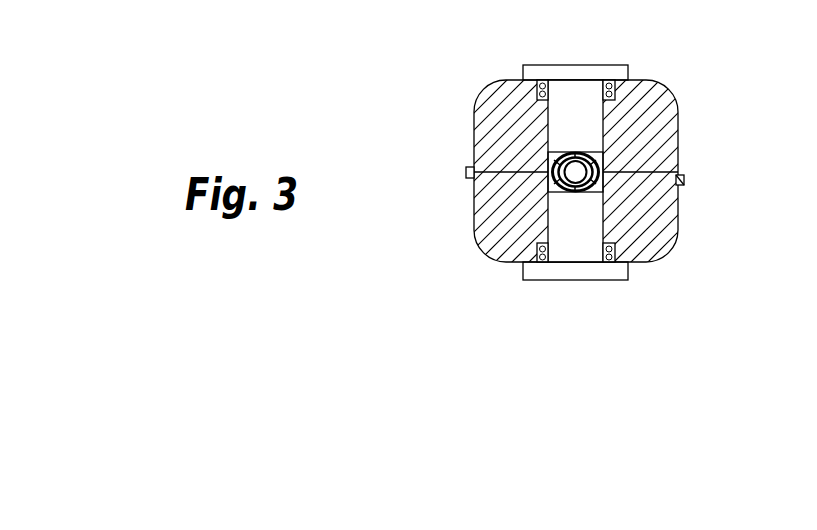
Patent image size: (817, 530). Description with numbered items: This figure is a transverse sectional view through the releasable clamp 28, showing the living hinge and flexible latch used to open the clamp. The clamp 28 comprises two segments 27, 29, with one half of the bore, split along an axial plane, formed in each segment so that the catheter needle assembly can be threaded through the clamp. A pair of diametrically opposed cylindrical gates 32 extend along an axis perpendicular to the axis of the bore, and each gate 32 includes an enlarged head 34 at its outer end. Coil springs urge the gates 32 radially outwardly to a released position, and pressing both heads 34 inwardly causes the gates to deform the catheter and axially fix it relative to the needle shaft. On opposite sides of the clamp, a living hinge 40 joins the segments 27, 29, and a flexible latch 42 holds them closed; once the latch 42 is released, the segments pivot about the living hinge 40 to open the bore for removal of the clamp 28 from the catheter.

The segment 27 is at (475, 119).
The releasable clamp 28 is at (662, 89).
The segment 29 is at (476, 228).
The cylindrical gate 32 is at (558, 112).
The enlarged head 34 is at (608, 68).
The living hinge 40 is at (466, 173).
The flexible latch 42 is at (684, 180).